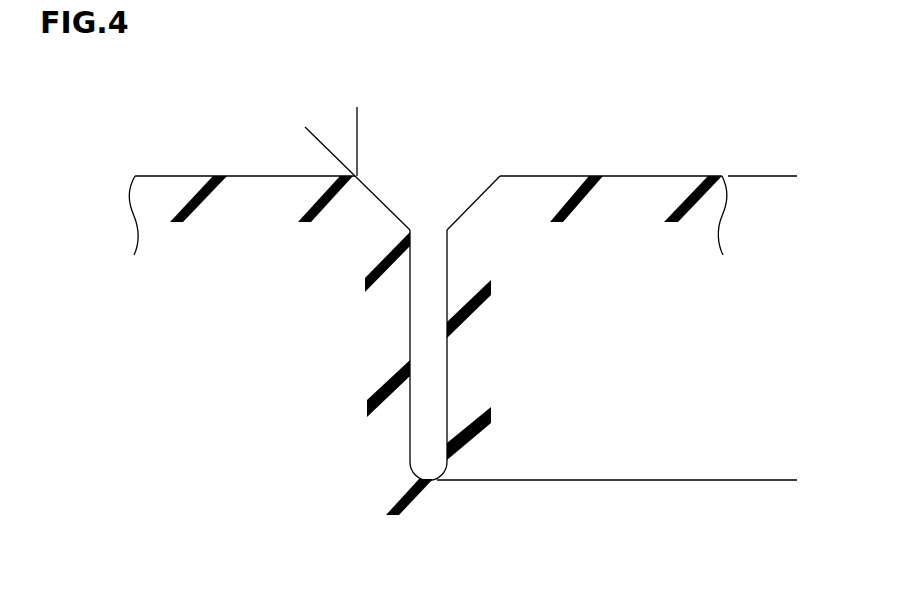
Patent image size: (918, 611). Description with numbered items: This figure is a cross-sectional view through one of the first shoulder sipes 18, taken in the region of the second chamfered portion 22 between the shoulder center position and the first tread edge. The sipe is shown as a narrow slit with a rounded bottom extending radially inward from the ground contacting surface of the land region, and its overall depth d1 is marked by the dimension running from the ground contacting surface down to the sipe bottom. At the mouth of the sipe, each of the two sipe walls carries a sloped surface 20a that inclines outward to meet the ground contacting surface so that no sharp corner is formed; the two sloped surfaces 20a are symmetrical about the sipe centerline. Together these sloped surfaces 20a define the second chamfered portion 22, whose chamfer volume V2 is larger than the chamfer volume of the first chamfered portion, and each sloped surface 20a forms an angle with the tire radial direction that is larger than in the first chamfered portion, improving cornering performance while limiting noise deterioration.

The first shoulder sipe 18 is at (428, 386).
The sloped surface 20a is at (386, 205).
The second chamfered portion 22 is at (453, 183).
The chamfer volume V2 is at (428, 193).
The overall depth d1 is at (793, 176).